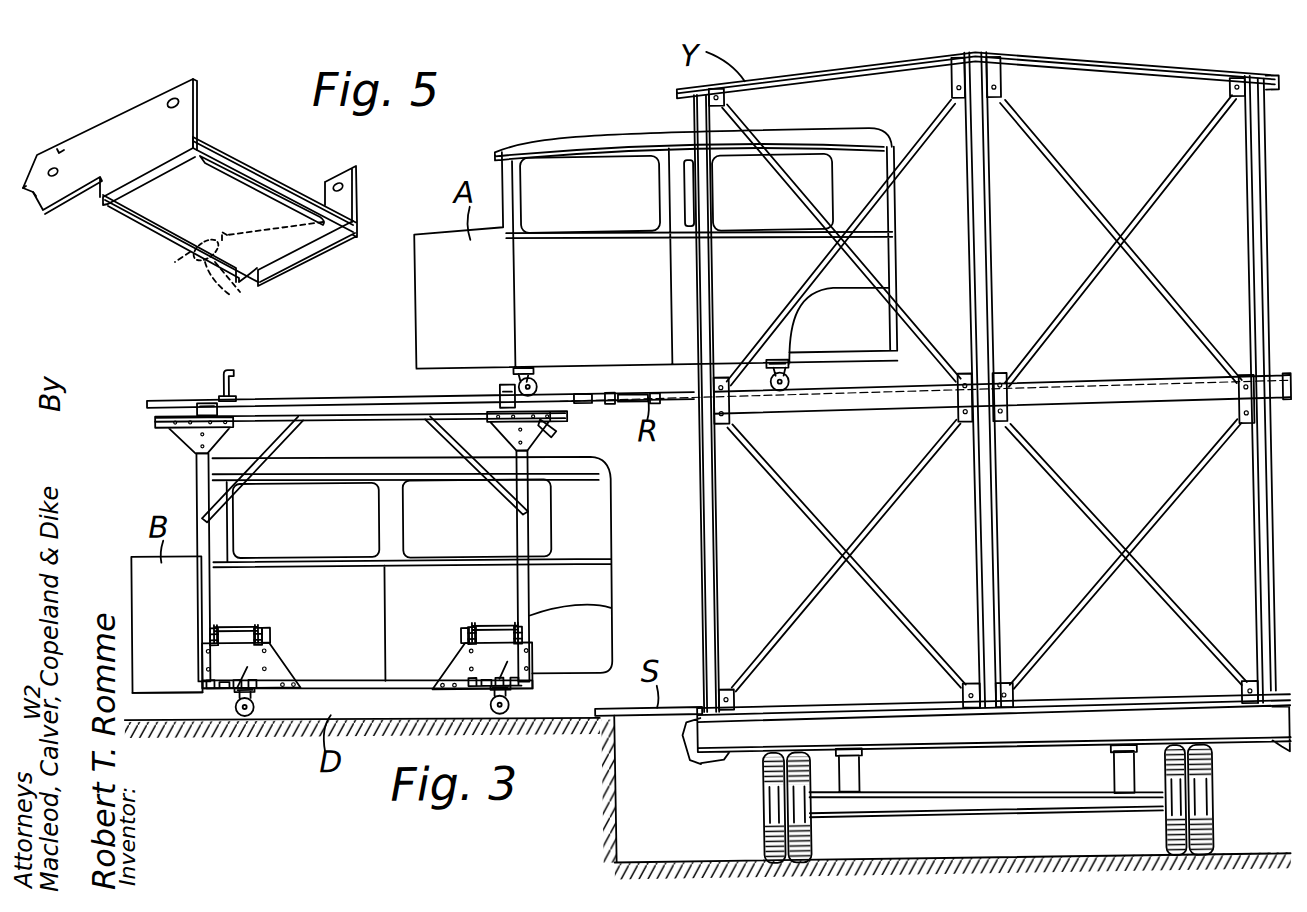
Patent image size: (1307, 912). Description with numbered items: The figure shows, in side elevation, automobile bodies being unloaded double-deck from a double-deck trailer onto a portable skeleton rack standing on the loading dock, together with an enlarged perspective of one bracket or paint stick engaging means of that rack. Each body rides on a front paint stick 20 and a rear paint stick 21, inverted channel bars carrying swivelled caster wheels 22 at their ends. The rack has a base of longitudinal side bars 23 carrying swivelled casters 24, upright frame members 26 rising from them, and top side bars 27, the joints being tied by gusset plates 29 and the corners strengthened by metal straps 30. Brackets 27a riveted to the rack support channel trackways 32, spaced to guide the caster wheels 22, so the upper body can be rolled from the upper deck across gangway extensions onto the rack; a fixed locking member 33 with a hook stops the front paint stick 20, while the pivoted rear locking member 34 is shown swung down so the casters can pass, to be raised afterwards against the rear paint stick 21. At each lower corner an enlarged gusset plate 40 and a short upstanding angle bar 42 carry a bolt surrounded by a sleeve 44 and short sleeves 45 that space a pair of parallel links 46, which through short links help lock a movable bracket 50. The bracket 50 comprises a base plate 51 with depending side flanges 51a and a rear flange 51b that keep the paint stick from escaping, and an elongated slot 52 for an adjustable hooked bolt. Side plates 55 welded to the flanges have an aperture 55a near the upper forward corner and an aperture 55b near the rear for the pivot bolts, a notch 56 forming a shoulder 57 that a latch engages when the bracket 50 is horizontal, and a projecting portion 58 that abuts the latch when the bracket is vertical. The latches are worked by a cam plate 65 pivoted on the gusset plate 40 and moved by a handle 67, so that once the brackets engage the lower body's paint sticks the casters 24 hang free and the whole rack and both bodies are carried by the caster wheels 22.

In FIG. 3, the front paint stick 20 is at (533, 370).
In FIG. 3, the rear paint stick 21 is at (770, 364).
In FIG. 3, the swivelled caster wheels 22 is at (793, 381).
In FIG. 3, the longitudinal side bars 23 is at (365, 680).
In FIG. 3, the swivelled casters 24 is at (252, 704).
In FIG. 3, the upright frame member 26 is at (205, 587).
In FIG. 3, the top side bars 27 is at (363, 416).
In FIG. 3, the brackets 27a is at (212, 401).
In FIG. 3, the gusset plates 29 is at (213, 436).
In FIG. 3, the metal straps 30 is at (263, 443).
In FIG. 3, the channel trackways 32 is at (358, 390).
In FIG. 3, the fixed locking member 33 is at (234, 369).
In FIG. 3, the rear locking member 34 is at (540, 420).
In FIG. 3, the enlarged gusset plates 40 is at (277, 666).
In FIG. 3, the short upstanding angle bar 42 is at (267, 625).
In FIG. 3, the sleeve 44 is at (247, 609).
In FIG. 3, the short sleeves 45 is at (217, 622).
In FIG. 3, the parallel links 46 is at (212, 634).
In FIG. 5, the movable bracket 50 is at (241, 140).
In FIG. 5, the base plate 51 is at (150, 207).
In FIG. 5, the side flanges 51a is at (167, 176).
In FIG. 5, the rear flange 51b is at (165, 240).
In FIG. 5, the elongated slot 52 is at (250, 182).
In FIG. 5, the side plates 55 is at (130, 127).
In FIG. 5, the aperture 55a is at (176, 104).
In FIG. 5, the aperture 55b is at (53, 168).
In FIG. 5, the notch 56 is at (33, 207).
In FIG. 5, the shoulder 57 is at (33, 197).
In FIG. 5, the projecting portion 58 is at (58, 147).
In FIG. 3, the cam plate 65 is at (230, 689).
In FIG. 3, the handle 67 is at (247, 665).